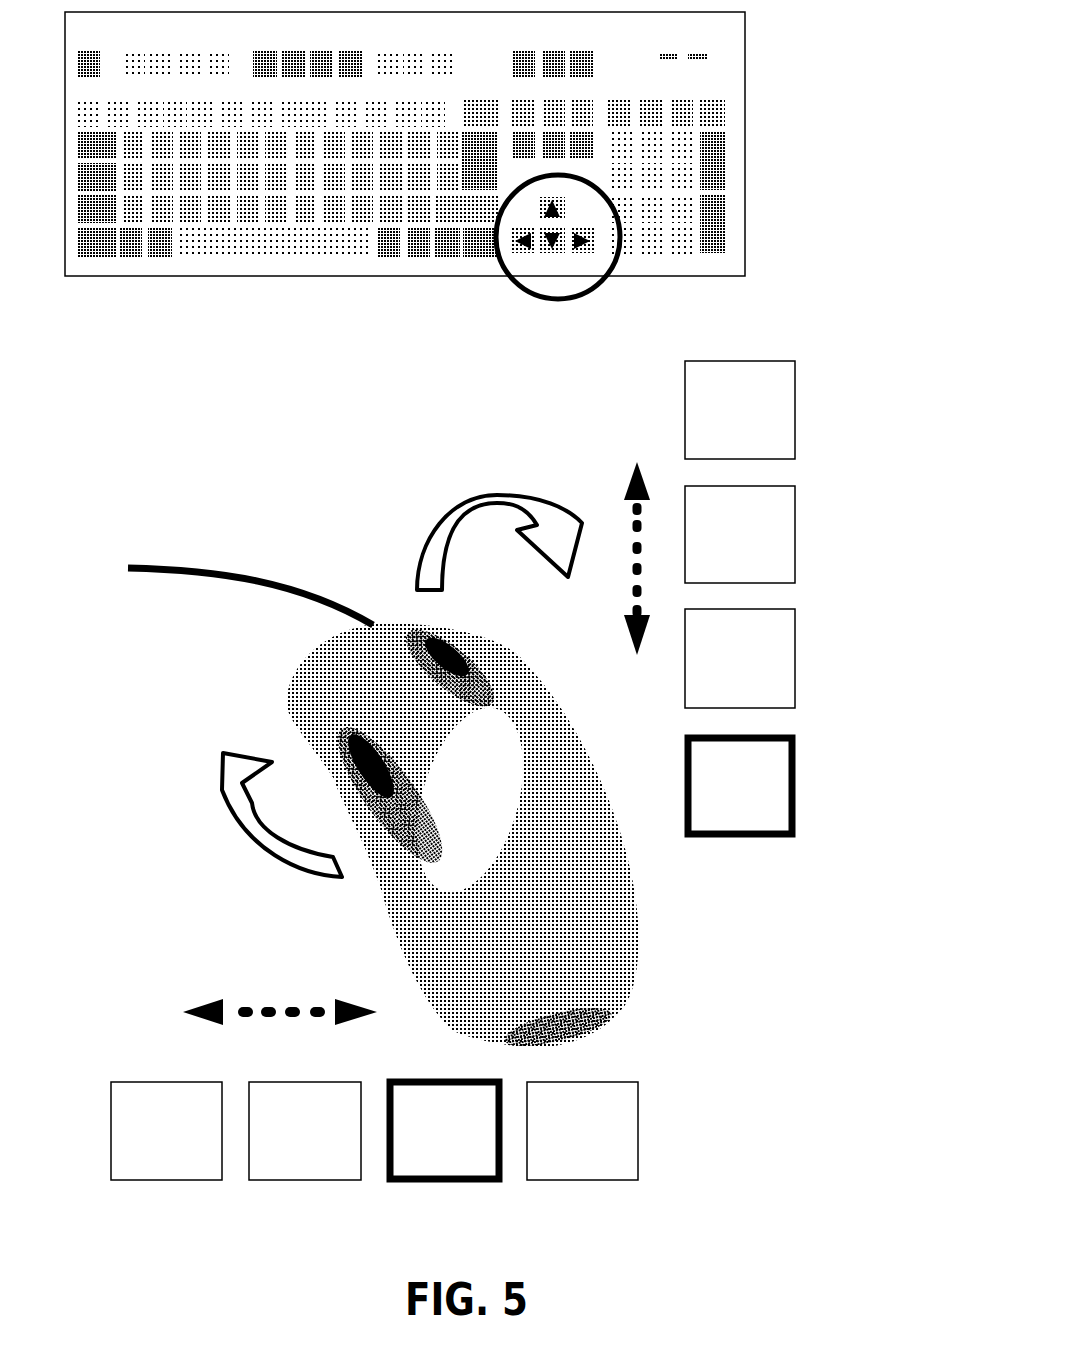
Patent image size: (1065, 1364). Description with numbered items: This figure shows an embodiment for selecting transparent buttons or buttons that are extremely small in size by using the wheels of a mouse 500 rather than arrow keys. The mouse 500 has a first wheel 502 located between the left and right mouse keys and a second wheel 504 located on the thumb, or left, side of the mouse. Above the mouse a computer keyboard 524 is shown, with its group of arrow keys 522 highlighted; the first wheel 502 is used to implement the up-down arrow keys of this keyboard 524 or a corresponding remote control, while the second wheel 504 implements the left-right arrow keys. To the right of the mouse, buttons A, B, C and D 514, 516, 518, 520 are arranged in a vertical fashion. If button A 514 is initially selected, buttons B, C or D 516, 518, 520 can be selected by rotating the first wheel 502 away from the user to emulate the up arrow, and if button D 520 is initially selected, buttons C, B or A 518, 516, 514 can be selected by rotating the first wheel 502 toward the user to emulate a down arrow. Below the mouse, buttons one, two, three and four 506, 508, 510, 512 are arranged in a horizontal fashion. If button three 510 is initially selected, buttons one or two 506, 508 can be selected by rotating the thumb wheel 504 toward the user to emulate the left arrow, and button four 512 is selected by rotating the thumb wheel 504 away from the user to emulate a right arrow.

The mouse 500 is at (388, 933).
The first wheel 502 is at (453, 640).
The second wheel 504 is at (353, 738).
The button 1 506 is at (168, 1180).
The button 2 508 is at (307, 1180).
The button 3 510 is at (442, 1183).
The button 4 512 is at (582, 1180).
The button A 514 is at (798, 785).
The button B 516 is at (795, 662).
The button C 518 is at (795, 539).
The button D 520 is at (795, 401).
The arrow keys (highlighted region) 522 is at (506, 291).
The computer keyboard 524 is at (248, 276).